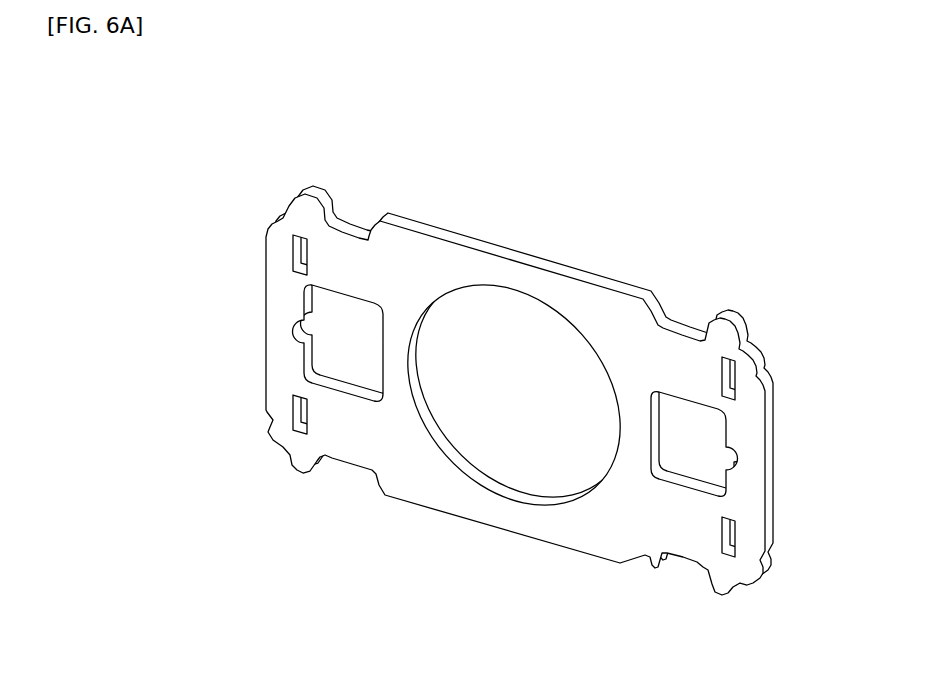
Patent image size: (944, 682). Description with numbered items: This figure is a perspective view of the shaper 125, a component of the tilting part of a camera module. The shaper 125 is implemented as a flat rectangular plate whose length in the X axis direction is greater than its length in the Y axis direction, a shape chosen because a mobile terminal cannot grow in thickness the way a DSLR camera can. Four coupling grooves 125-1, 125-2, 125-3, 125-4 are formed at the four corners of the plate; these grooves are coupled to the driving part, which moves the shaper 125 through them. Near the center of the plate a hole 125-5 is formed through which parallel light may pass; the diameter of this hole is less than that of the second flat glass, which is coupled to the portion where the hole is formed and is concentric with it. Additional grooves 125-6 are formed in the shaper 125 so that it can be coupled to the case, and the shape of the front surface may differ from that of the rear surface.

The shaper 125 is at (186, 107).
The coupling groove 125-1 is at (294, 263).
The coupling groove 125-2 is at (716, 366).
The coupling groove 125-3 is at (296, 418).
The coupling groove 125-4 is at (723, 541).
The hole 125-5 is at (529, 341).
The groove 125-6 is at (338, 327).